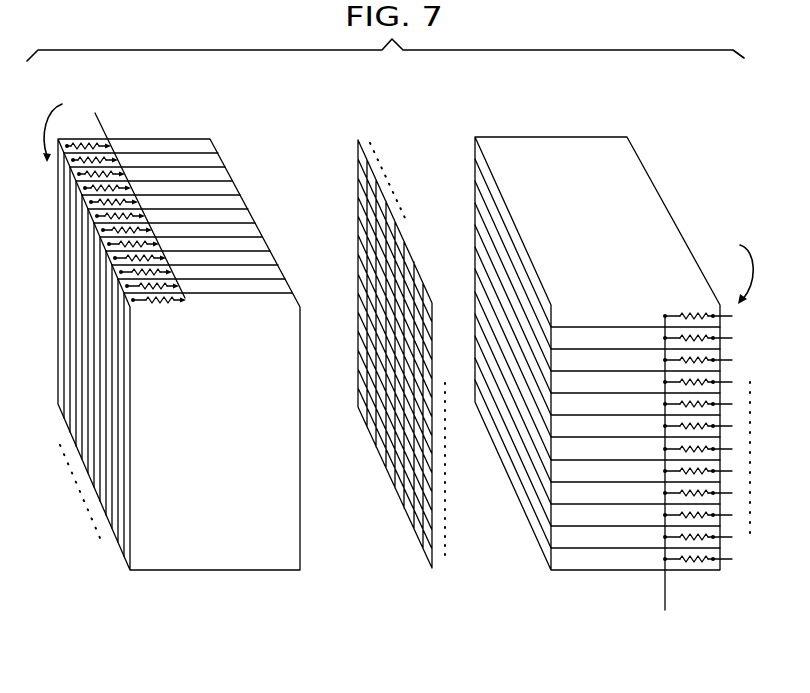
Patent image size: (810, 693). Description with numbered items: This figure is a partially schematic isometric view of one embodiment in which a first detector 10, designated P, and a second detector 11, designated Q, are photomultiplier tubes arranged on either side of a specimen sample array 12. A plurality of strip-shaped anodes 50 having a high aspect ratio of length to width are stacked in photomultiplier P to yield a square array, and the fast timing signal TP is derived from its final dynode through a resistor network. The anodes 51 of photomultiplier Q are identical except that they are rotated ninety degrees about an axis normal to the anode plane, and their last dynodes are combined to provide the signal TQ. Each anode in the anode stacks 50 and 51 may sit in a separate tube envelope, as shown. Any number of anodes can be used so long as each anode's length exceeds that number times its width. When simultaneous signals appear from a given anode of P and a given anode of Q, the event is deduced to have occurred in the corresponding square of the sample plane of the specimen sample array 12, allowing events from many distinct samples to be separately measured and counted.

The first detector 10 is at (205, 558).
The second detector 11 is at (585, 570).
The specimen sample array 12 is at (420, 543).
The strip-shaped anodes 50 is at (61, 126).
The anodes of photomultiplier Q 51 is at (736, 270).